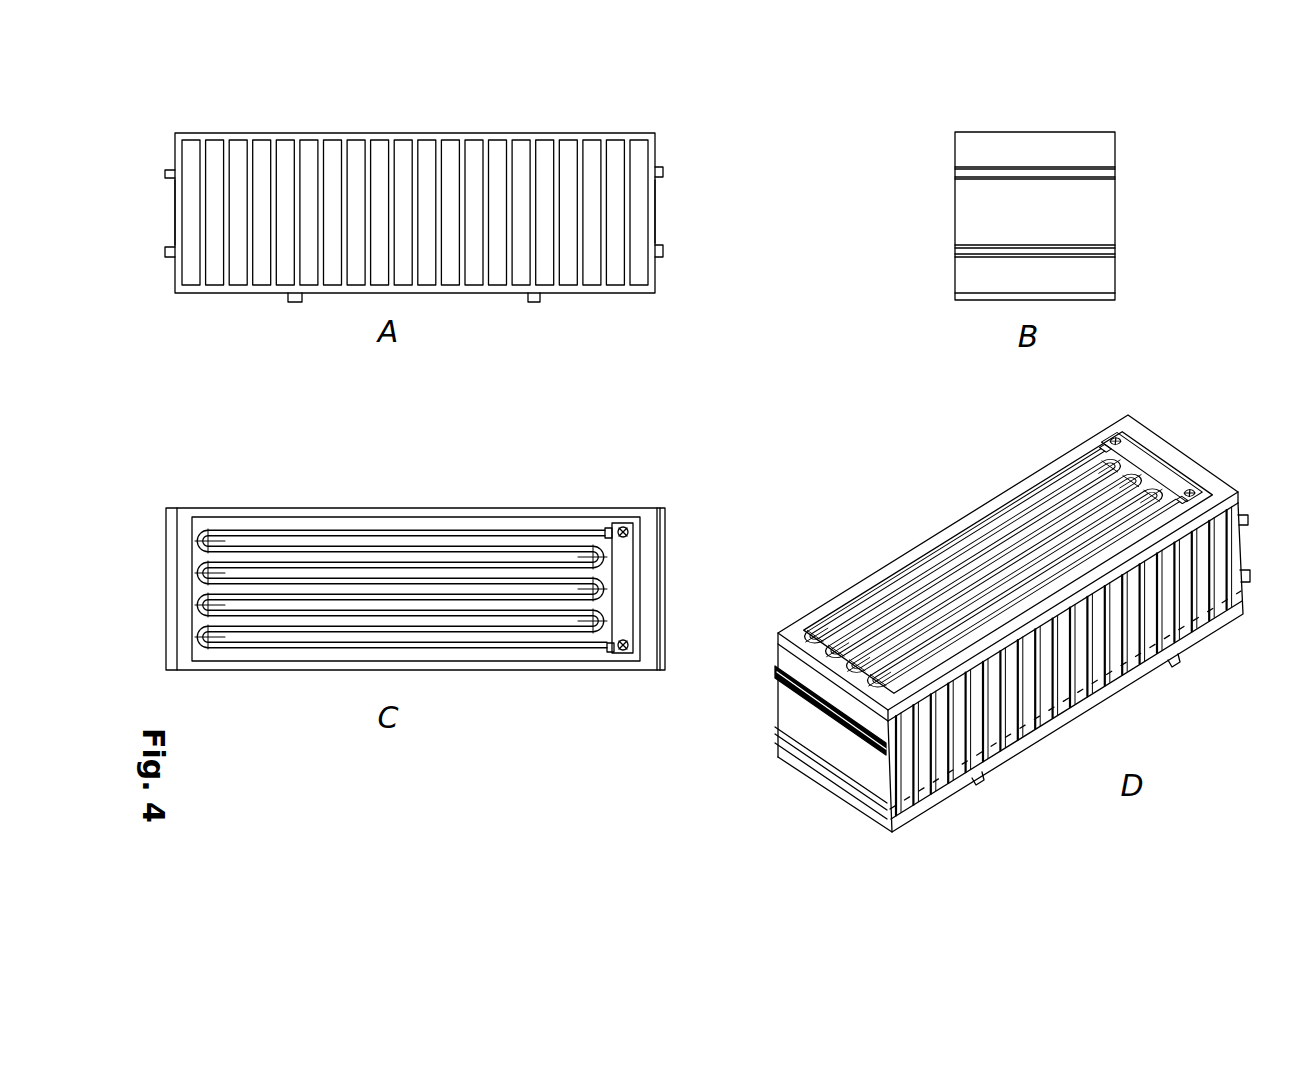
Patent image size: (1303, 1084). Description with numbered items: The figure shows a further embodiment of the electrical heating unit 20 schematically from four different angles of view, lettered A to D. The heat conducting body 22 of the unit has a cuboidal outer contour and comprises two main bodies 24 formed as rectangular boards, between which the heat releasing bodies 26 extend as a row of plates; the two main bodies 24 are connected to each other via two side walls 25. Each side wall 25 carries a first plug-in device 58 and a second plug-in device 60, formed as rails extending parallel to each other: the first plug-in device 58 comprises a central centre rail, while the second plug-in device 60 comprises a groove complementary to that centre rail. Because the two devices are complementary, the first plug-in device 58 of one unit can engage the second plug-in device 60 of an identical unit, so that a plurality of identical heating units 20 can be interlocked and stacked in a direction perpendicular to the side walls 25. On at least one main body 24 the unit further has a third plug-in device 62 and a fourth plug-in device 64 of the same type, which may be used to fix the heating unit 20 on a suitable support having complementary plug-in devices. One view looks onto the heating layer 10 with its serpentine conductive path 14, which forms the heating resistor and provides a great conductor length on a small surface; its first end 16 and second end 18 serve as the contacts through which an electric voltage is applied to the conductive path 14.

The heating layer 10 is at (263, 133).
The conductive path 14 is at (470, 535).
The first end 16 is at (605, 528).
The second end 18 is at (600, 650).
The heating unit 20 is at (386, 110).
The heat conducting body 22 is at (515, 134).
The main body 24 is at (612, 135).
The side wall 25 is at (655, 230).
The heat releasing body 26 is at (628, 205).
The first plug-in device 58 is at (662, 170).
The second plug-in device 60 is at (665, 255).
The third plug-in device 62 is at (540, 302).
The fourth plug-in device 64 is at (290, 300).